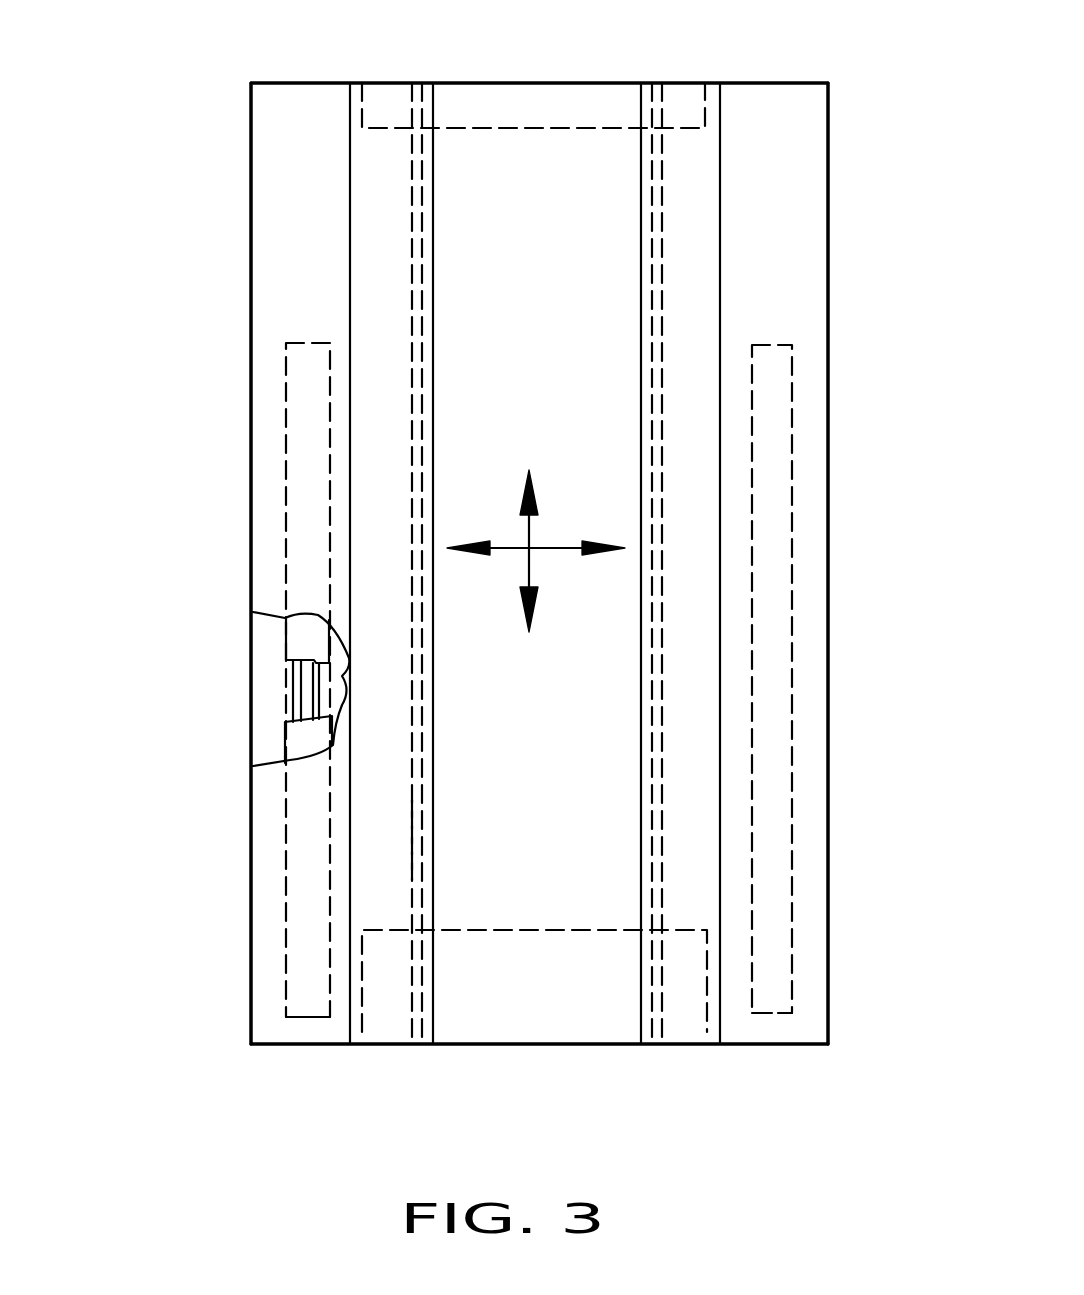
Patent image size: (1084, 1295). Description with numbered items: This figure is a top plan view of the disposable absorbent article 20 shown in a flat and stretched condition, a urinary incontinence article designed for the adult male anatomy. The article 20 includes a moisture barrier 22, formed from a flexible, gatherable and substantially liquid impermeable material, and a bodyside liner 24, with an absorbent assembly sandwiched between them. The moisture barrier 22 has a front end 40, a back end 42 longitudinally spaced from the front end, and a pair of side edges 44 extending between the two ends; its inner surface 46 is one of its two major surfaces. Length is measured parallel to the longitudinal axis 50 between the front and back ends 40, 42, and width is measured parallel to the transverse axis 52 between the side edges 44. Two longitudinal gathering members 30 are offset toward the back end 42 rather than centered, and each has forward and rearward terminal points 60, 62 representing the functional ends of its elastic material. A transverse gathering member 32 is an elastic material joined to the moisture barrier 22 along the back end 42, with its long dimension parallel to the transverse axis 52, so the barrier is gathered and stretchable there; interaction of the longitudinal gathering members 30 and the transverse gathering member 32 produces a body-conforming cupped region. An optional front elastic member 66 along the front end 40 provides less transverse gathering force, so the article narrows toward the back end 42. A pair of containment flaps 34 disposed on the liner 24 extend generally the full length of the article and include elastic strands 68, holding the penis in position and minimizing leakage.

The disposable absorbent article 20 is at (165, 128).
The moisture barrier 22 is at (262, 748).
The bodyside liner 24 is at (558, 299).
The longitudinal gathering members 30 is at (293, 640).
The transverse gathering member 32 is at (527, 1044).
The containment flaps 34 is at (403, 843).
The front end 40 is at (750, 80).
The back end 42 is at (756, 1044).
The side edges 44 is at (829, 157).
The inner surface 46 is at (260, 704).
The longitudinal axis 50 is at (525, 530).
The transverse axis 52 is at (548, 548).
The forward terminal points 60 is at (290, 347).
The rearward terminal points 62 is at (775, 1013).
The front elastic member 66 is at (512, 100).
The elastic strands 68 is at (420, 300).